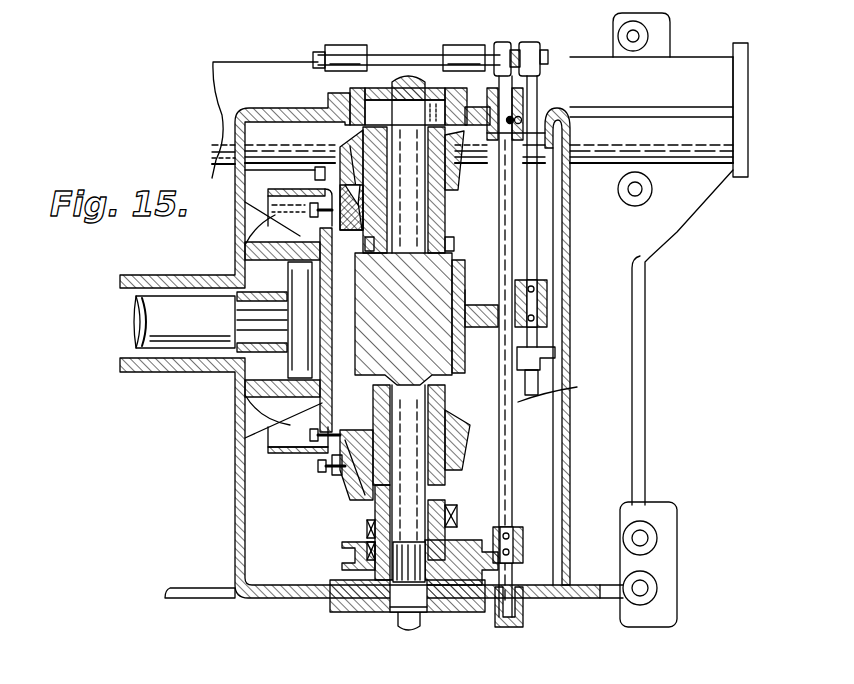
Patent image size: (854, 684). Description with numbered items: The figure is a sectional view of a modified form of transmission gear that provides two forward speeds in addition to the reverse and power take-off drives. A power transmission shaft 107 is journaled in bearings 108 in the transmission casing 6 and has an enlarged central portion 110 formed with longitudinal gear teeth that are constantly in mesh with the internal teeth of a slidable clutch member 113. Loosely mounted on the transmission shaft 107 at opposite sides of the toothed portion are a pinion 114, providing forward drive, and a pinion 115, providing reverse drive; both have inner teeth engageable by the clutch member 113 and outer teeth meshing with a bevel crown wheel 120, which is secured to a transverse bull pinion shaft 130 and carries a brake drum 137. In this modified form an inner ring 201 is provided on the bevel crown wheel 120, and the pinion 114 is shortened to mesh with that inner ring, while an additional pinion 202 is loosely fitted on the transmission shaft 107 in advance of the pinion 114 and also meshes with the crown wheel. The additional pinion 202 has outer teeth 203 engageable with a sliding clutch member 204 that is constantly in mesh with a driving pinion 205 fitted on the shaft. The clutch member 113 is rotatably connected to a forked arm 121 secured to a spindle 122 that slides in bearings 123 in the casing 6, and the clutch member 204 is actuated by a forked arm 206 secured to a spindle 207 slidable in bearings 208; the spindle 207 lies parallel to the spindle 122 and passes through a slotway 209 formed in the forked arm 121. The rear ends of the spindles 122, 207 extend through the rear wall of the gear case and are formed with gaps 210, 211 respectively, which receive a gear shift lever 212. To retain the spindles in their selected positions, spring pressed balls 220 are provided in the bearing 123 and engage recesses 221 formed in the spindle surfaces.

The transmission casing 6 is at (236, 497).
The power transmission shaft 107 is at (385, 216).
The bearings 108 is at (378, 92).
The enlarged central portion 110 is at (437, 265).
The slidable clutch member 113 is at (465, 300).
The pinion 114 is at (445, 452).
The pinion 115 is at (440, 190).
The bevel crown wheel 120 is at (347, 490).
The forked arm 121 is at (548, 286).
The spindle 122 is at (542, 185).
The bearings 123 is at (542, 130).
The bull pinion shaft 130 is at (205, 342).
The brake drum 137 is at (270, 196).
The inner ring 201 is at (330, 450).
The additional pinion 202 is at (452, 487).
The teeth 203 is at (452, 530).
The sliding clutch member 204 is at (348, 573).
The driving pinion 205 is at (385, 580).
The forked arm 206 is at (523, 543).
The spindle 207 is at (560, 392).
The bearings 208 is at (518, 592).
The slotway 209 is at (495, 327).
The gap 210 is at (500, 45).
The gap 211 is at (536, 48).
The gear shift lever 212 is at (516, 50).
The spring pressed balls 220 is at (540, 125).
The recesses 221 is at (520, 122).